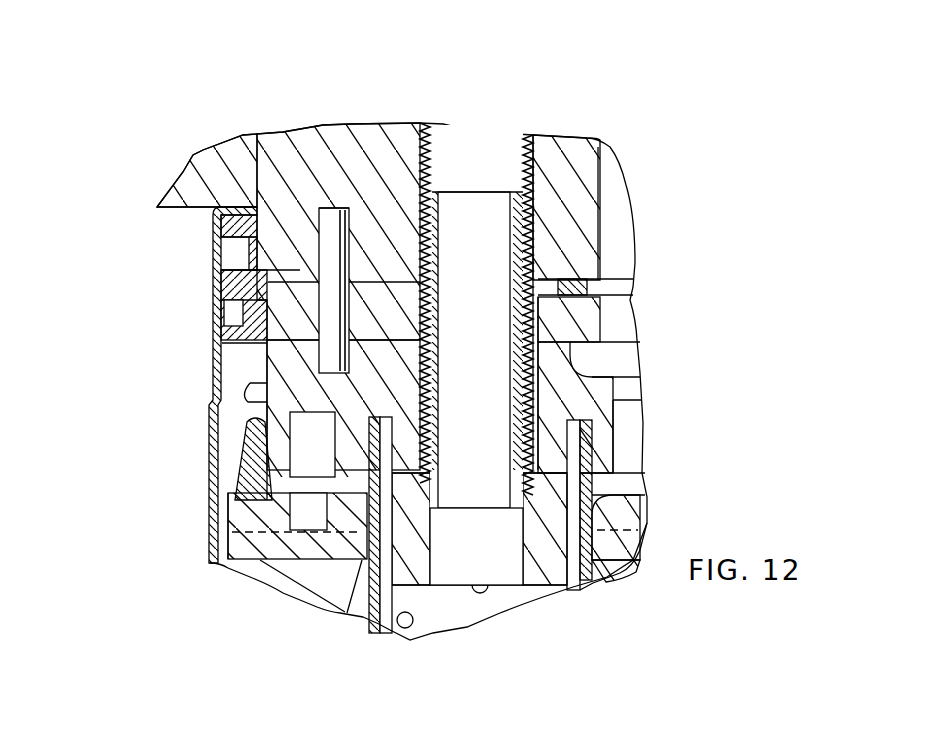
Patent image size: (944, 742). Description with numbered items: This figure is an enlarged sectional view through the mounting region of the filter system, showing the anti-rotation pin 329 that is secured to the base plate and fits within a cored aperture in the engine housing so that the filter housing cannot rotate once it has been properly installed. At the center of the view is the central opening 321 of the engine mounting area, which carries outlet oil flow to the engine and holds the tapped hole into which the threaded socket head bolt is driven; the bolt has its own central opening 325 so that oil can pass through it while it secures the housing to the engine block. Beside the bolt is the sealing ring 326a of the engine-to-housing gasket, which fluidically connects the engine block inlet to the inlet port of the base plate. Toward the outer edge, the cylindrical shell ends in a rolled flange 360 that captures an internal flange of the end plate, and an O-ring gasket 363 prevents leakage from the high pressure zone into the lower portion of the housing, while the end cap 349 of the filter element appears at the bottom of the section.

The central opening 321 is at (473, 210).
The central opening of the bolt 325 is at (488, 498).
The sealing ring 326a is at (568, 284).
The anti-rotation pin 329 is at (330, 220).
The end cap 349 is at (263, 560).
The rolled flange 360 is at (213, 258).
The O-ring gasket 363 is at (213, 317).